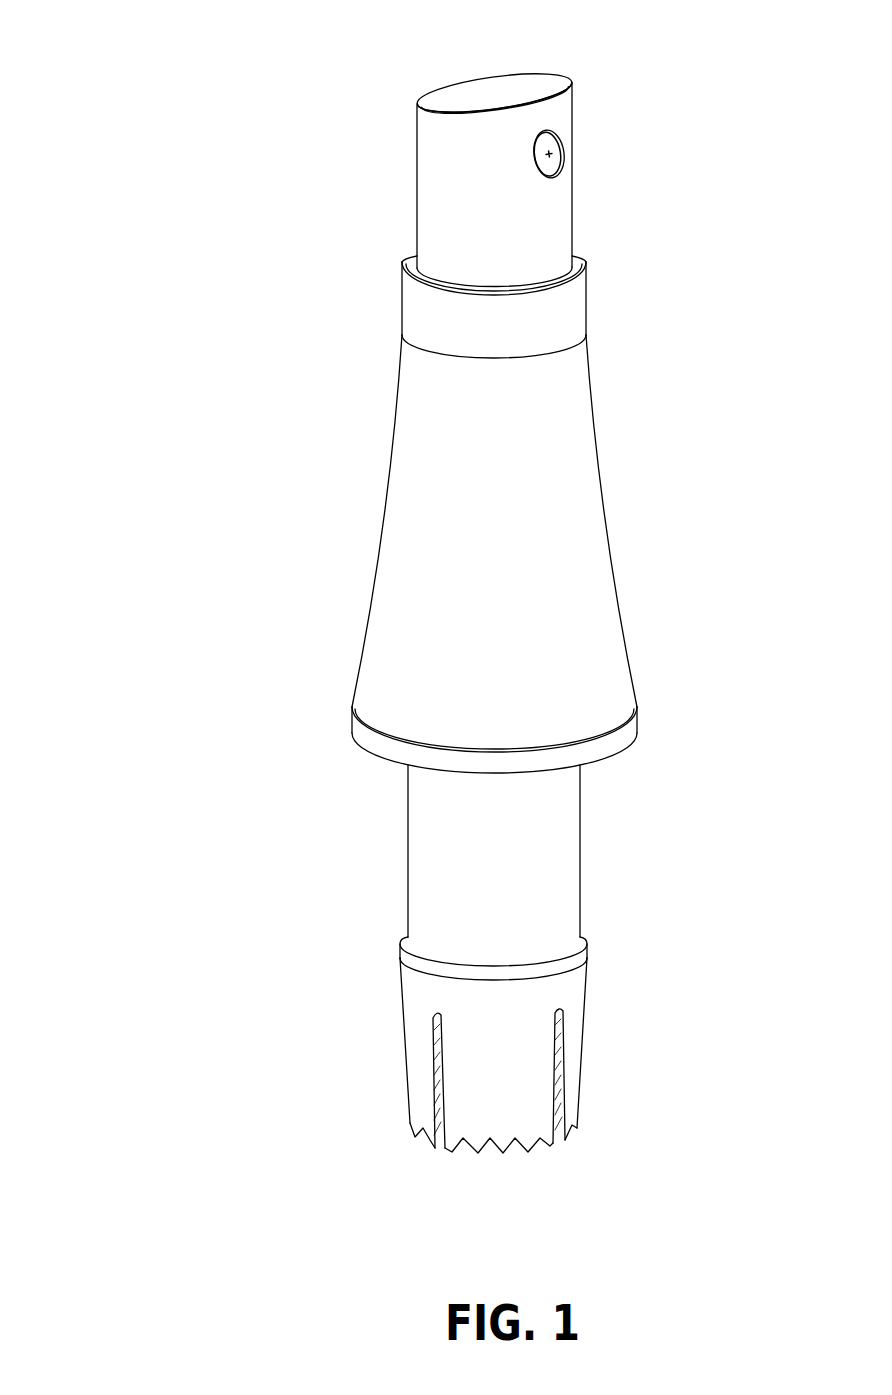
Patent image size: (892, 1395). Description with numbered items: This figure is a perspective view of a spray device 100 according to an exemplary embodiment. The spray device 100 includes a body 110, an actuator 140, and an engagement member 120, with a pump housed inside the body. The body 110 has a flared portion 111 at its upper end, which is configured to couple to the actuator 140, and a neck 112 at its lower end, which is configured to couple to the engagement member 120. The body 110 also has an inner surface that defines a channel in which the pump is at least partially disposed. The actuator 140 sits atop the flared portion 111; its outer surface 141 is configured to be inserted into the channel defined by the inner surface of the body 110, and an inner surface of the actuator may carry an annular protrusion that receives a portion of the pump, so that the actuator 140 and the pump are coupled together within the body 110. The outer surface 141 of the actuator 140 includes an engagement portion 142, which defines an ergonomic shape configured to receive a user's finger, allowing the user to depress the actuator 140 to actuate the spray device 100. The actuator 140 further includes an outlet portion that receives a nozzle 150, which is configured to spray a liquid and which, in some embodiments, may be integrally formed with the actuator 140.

The spray device 100 is at (197, 189).
The body 110 is at (430, 462).
The flared portion 111 is at (377, 675).
The neck 112 is at (427, 858).
The engagement member 120 is at (410, 1062).
The actuator 140 is at (430, 181).
The outer surface 141 is at (557, 228).
The engagement portion 142 is at (473, 100).
The nozzle 150 is at (566, 141).